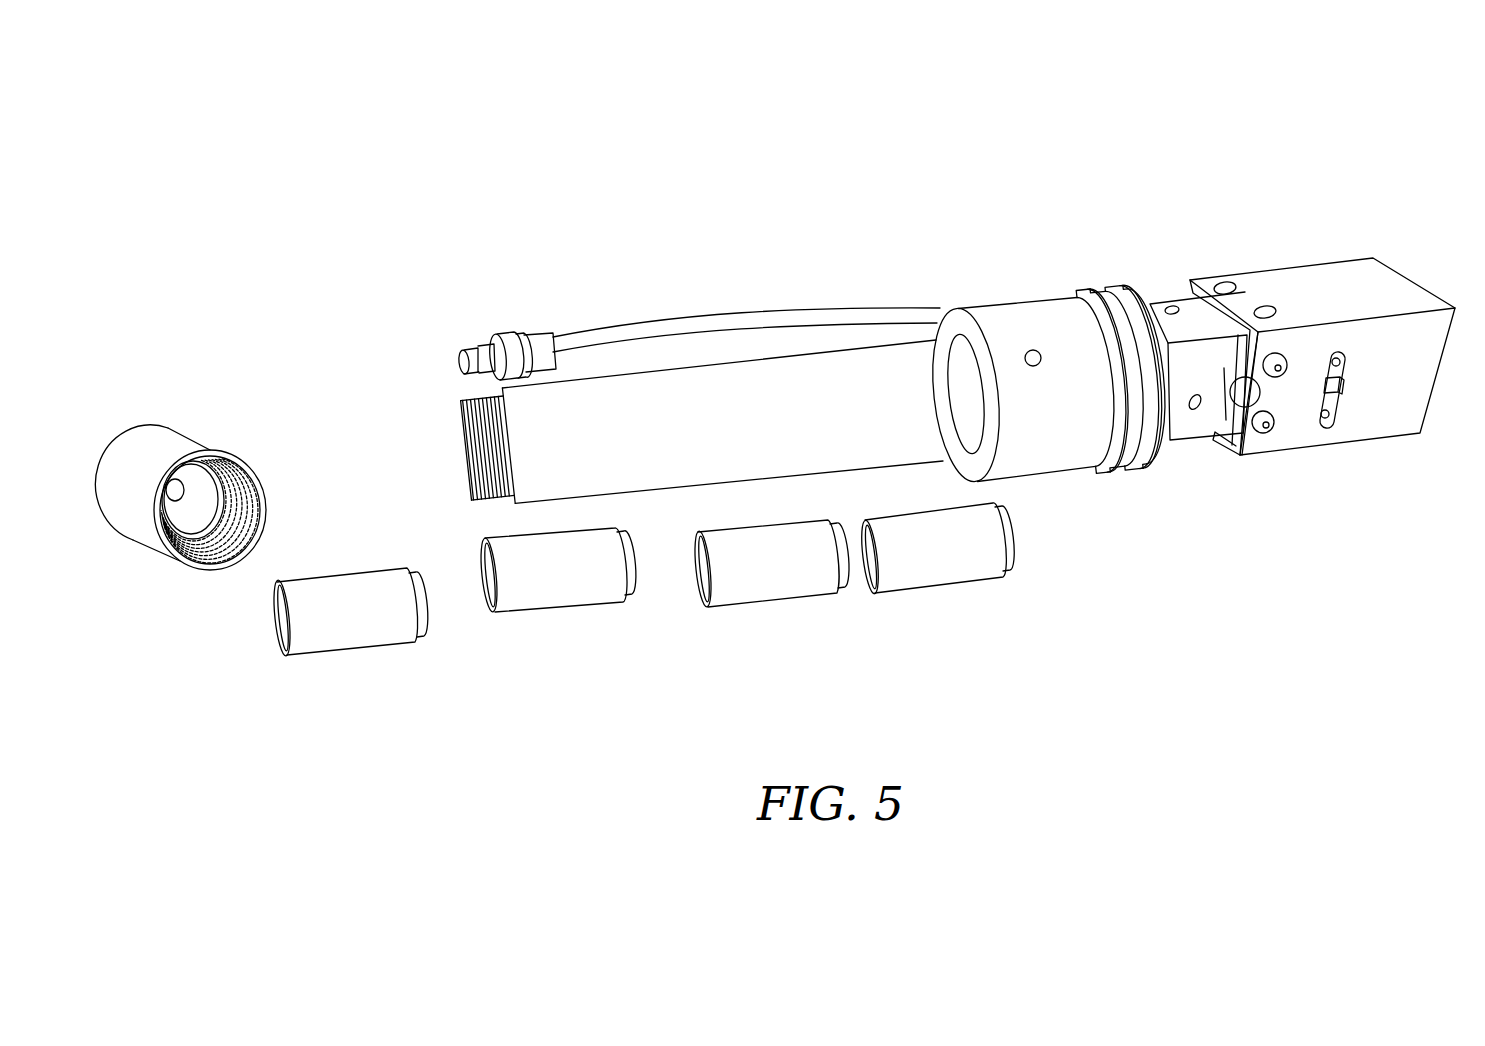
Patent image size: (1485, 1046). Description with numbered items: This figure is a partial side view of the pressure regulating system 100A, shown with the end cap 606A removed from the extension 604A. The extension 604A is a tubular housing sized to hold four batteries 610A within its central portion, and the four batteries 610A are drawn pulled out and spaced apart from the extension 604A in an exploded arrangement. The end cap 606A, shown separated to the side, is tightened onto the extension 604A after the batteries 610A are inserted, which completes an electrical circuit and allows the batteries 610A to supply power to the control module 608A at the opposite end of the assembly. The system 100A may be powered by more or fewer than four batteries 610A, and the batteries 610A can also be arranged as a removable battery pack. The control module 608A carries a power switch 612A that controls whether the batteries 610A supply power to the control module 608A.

The pressure regulating system 100A is at (1046, 230).
The extension 604A is at (803, 382).
The end cap 606A is at (167, 448).
The control module 608A is at (1397, 402).
The batteries 610A is at (800, 623).
The power switch 612A is at (1313, 438).